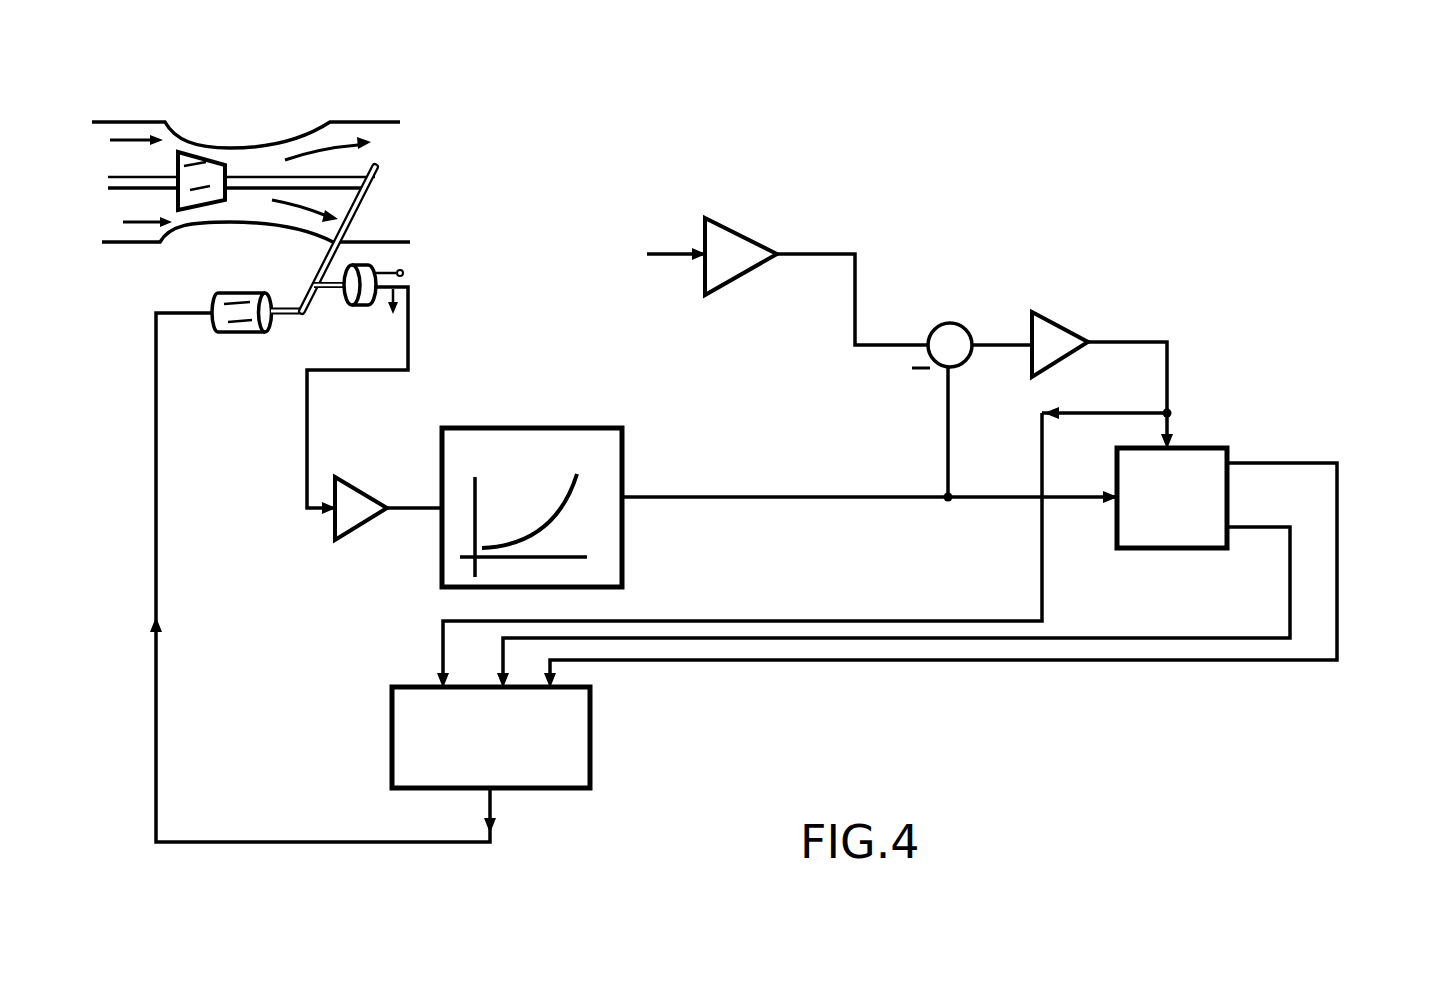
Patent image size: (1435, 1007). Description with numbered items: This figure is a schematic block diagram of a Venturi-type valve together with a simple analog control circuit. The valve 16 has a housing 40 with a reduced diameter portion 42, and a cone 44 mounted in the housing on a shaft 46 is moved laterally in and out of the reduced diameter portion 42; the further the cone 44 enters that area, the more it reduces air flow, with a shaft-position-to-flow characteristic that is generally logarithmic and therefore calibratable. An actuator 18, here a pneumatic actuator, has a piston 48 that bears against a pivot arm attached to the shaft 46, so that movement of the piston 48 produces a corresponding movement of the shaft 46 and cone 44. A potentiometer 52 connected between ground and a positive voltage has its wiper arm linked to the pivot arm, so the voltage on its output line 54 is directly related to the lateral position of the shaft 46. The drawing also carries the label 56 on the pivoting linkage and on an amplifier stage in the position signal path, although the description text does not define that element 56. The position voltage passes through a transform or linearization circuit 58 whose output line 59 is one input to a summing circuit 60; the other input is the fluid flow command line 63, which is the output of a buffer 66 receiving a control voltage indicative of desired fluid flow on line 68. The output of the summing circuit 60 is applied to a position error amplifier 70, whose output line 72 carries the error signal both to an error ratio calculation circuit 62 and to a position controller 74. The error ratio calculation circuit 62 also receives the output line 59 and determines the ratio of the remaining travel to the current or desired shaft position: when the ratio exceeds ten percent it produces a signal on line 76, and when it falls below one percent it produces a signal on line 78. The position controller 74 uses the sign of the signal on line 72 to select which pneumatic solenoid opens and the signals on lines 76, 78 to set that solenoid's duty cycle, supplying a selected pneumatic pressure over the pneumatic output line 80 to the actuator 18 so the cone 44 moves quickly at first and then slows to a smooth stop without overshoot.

The valve 16 is at (248, 112).
The actuator 18 is at (233, 333).
The housing 40 is at (143, 118).
The reduced diameter portion 42 is at (265, 145).
The cone 44 is at (198, 150).
The shaft 46 is at (123, 192).
The piston 48 is at (282, 320).
The potentiometer 52 is at (363, 306).
The output line 54 is at (308, 415).
The lever / amplifier 56 is at (370, 212).
The transform or linearization circuit 58 is at (535, 427).
The output line 59 is at (950, 492).
The summing circuit 60 is at (972, 316).
The error ratio calculation circuit 62 is at (1173, 550).
The fluid flow command line 63 is at (857, 282).
The buffer 66 is at (753, 233).
The line 68 is at (663, 252).
The position error amplifier 70 is at (1080, 315).
The output line 72 is at (1117, 393).
The position controller 74 is at (392, 717).
The line 76 is at (1338, 582).
The line 78 is at (1287, 608).
The pneumatic output line 80 is at (162, 677).